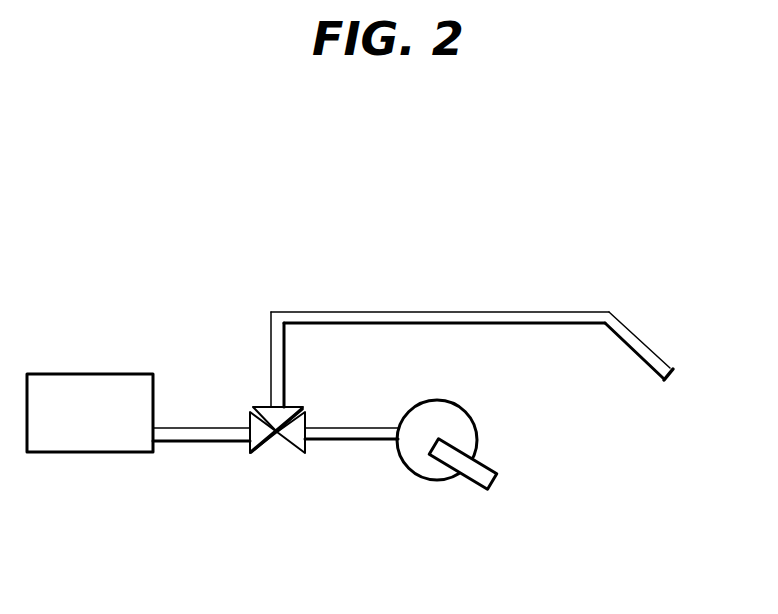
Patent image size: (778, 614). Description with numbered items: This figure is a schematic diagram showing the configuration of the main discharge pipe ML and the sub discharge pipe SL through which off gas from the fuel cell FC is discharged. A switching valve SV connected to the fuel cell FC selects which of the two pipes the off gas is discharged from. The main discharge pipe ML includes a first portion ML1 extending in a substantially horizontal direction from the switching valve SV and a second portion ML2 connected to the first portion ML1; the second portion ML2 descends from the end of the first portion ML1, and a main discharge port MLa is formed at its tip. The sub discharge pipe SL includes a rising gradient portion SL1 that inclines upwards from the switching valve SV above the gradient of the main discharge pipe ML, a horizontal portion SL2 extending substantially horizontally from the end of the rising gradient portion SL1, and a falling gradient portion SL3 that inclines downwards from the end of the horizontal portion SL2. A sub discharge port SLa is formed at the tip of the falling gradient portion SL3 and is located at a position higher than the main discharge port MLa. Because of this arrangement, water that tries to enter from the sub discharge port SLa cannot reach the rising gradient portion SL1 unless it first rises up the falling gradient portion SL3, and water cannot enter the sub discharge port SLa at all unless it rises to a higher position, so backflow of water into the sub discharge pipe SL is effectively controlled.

The fuel cell FC is at (90, 413).
The switching valve SV is at (263, 453).
The main discharge pipe ML is at (432, 496).
The first portion ML1 is at (352, 440).
The second portion ML2 is at (478, 485).
The main discharge port MLa is at (494, 505).
The sub discharge pipe SL is at (494, 311).
The rising gradient portion SL1 is at (271, 357).
The horizontal portion SL2 is at (435, 312).
The falling gradient portion SL3 is at (631, 333).
The sub discharge port SLa is at (668, 379).